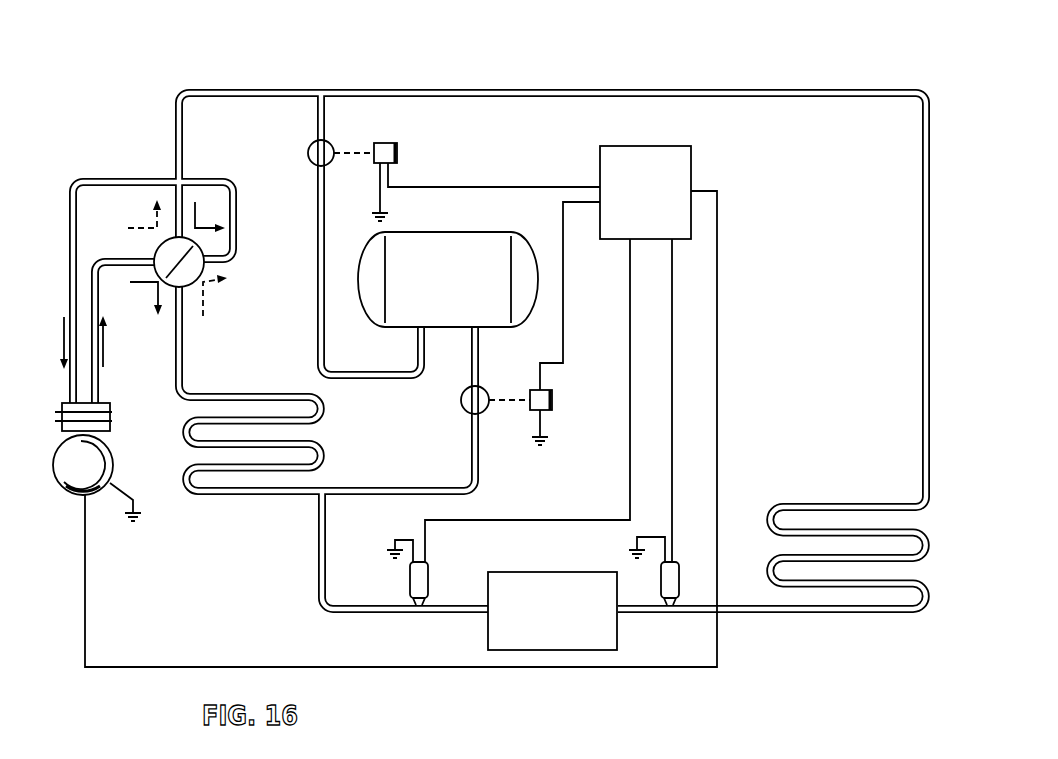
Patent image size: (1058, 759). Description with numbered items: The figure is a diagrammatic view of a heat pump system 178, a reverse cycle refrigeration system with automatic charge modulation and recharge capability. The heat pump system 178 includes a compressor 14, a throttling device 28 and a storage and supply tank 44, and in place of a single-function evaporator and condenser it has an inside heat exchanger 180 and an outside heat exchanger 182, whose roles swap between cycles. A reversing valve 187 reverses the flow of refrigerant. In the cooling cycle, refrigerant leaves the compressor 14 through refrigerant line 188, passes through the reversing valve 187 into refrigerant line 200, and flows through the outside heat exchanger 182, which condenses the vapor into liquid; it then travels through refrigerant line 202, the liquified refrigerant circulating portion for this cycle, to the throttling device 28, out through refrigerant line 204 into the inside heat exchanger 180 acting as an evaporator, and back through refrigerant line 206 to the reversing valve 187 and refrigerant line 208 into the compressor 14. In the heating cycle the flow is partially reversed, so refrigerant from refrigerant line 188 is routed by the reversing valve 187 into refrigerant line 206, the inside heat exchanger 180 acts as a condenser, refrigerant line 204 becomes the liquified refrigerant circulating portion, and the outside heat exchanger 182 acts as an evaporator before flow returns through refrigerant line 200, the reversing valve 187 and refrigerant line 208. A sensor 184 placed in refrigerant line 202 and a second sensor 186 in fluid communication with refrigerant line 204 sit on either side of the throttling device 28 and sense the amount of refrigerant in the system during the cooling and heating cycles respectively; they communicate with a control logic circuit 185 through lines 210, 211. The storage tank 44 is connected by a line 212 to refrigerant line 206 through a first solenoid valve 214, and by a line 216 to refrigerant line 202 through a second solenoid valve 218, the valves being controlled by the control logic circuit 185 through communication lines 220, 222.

The compressor 14 is at (115, 462).
The throttling device 28 is at (488, 633).
The storage and supply tank 44 is at (458, 232).
The heat pump system 178 is at (552, 260).
The inside heat exchanger 180 is at (852, 508).
The outside heat exchanger 182 is at (258, 478).
The sensor 184 is at (432, 565).
The control logic circuit 185 is at (693, 157).
The second sensor 186 is at (661, 577).
The reversing valve 187 is at (216, 272).
The refrigerant line 188 is at (100, 301).
The refrigerant line 200 is at (186, 358).
The refrigerant line 202 is at (353, 618).
The refrigerant line 204 is at (790, 615).
The refrigerant line 206 is at (268, 100).
The refrigerant line 208 is at (140, 180).
The line 210 is at (535, 518).
The line 211 is at (676, 368).
The line 212 is at (318, 207).
The first solenoid valve 214 is at (333, 143).
The line 216 is at (405, 487).
The second solenoid valve 218 is at (461, 400).
The communication line 220 is at (448, 187).
The communication line 222 is at (563, 327).